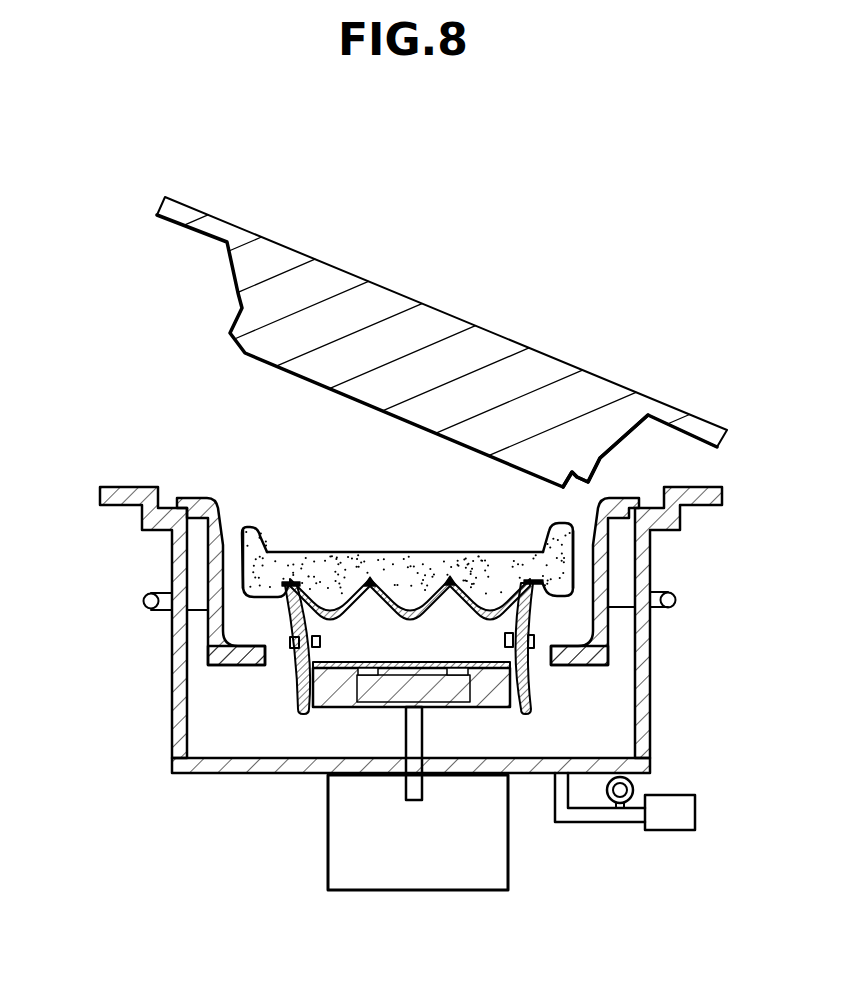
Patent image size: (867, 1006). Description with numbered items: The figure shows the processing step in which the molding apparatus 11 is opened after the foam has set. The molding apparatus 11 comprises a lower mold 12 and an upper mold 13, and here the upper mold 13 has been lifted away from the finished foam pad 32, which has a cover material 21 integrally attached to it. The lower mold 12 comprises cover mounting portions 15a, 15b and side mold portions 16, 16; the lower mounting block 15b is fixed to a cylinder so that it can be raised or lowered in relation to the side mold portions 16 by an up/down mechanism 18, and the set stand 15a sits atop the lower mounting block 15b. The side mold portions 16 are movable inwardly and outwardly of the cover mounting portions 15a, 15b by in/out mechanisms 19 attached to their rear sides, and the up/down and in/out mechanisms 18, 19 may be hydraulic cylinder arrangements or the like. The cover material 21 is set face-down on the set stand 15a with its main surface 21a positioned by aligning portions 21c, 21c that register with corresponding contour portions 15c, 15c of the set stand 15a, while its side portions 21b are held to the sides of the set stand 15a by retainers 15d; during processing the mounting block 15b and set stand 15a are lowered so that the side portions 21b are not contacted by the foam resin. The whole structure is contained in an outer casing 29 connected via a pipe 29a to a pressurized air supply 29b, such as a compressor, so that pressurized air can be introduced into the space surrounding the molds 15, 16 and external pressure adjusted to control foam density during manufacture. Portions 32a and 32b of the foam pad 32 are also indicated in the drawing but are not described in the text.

The molding apparatus 11 is at (422, 342).
The lower mold 12 is at (388, 655).
The upper mold 13 is at (500, 348).
The set stand 15 is at (389, 636).
The set stand 15a is at (293, 692).
The lower mounting block 15b is at (300, 708).
The contour portions 15c is at (243, 528).
The retainers 15d is at (289, 641).
The side mold portions 16 is at (604, 488).
The up/down mechanism 18 is at (350, 845).
The in/out mechanism 19 is at (144, 601).
The cover material 21 is at (410, 586).
The main surface 21a is at (318, 612).
The side portions 21b is at (267, 614).
The aligning portions 21c is at (284, 580).
The outer casing 29 is at (435, 834).
The pipe 29a is at (605, 822).
The pressurized air supply 29b is at (677, 822).
The foam pad 32 is at (416, 520).
The material projection 32a is at (357, 585).
The material edge portion 32b is at (243, 570).